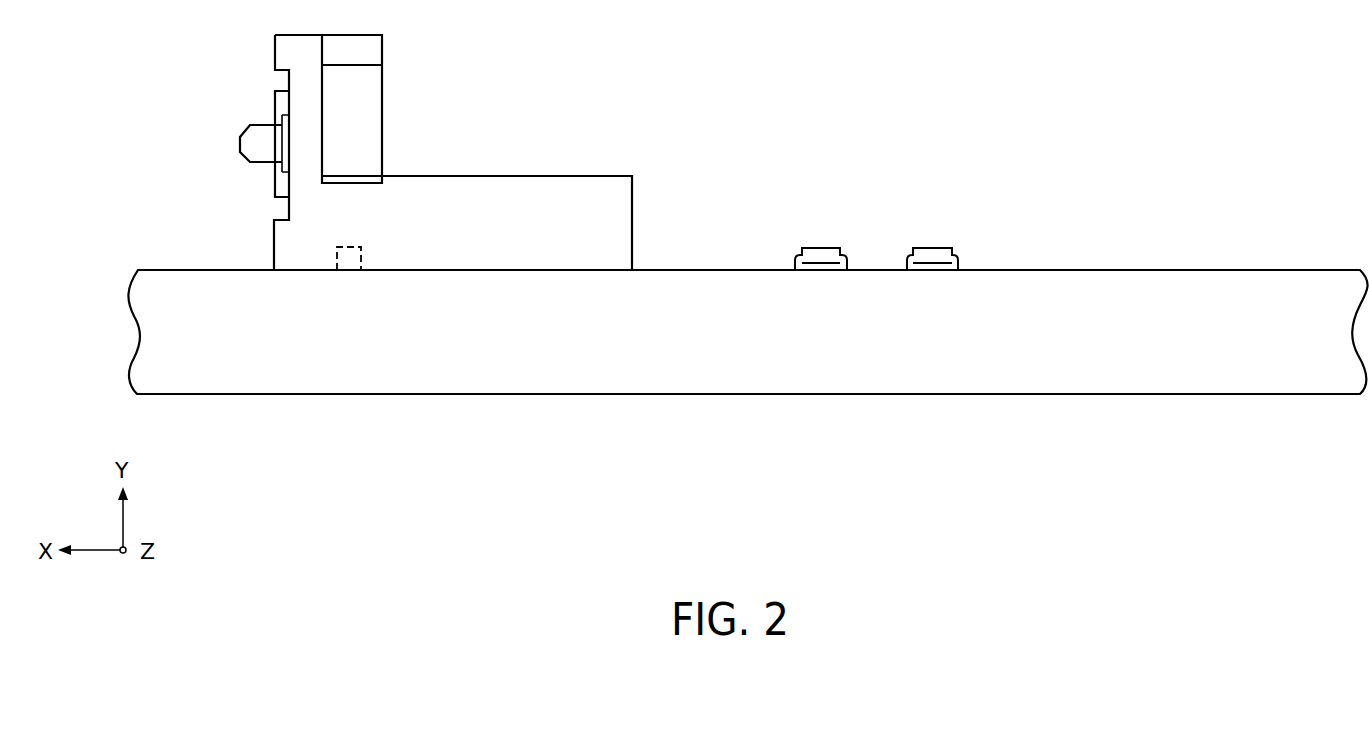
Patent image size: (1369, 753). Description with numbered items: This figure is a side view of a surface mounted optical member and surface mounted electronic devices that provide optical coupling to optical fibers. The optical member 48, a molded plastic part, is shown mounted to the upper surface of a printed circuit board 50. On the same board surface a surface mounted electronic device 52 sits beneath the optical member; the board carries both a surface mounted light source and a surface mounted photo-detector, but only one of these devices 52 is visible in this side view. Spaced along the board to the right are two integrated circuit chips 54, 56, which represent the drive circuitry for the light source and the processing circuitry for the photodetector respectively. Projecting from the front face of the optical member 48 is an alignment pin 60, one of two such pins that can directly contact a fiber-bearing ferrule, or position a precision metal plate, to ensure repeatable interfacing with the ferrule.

The optical member 48 is at (462, 102).
The printed circuit board 50 is at (1250, 277).
The surface mounted electronic device 52 is at (352, 247).
The integrated circuit chip 54 is at (830, 250).
The integrated circuit chip 56 is at (941, 250).
The alignment pin 60 is at (263, 160).